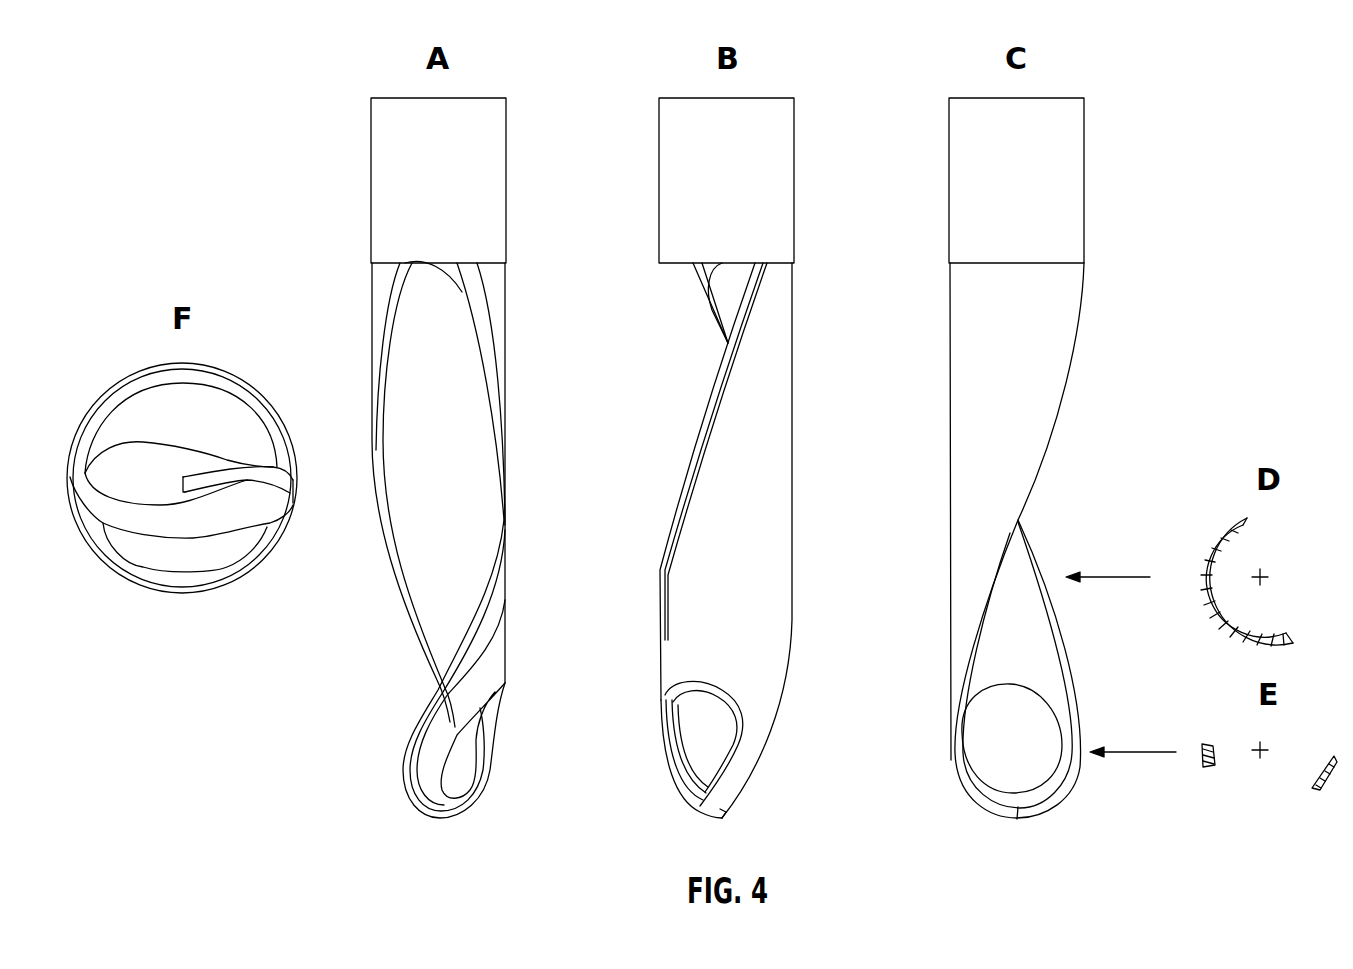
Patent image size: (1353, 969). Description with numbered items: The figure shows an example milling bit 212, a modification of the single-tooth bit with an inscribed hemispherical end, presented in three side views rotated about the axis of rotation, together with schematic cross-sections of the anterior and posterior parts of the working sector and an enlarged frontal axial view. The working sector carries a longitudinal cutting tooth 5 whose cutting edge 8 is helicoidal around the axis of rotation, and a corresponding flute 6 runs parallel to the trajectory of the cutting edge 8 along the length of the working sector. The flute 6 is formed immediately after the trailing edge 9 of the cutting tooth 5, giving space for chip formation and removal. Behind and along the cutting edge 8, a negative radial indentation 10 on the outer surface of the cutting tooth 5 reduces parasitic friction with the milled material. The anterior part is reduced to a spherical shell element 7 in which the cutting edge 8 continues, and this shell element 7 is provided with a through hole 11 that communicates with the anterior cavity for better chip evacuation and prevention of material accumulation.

The milling bit 212 is at (328, 134).
The cutting tooth 5 is at (766, 510).
The flute 6 is at (457, 418).
The spherical shell element 7 is at (755, 747).
The cutting edge 8 is at (413, 753).
The trailing edge 9 is at (393, 577).
The negative radial indentation 10 is at (718, 407).
The through hole 11 is at (987, 746).